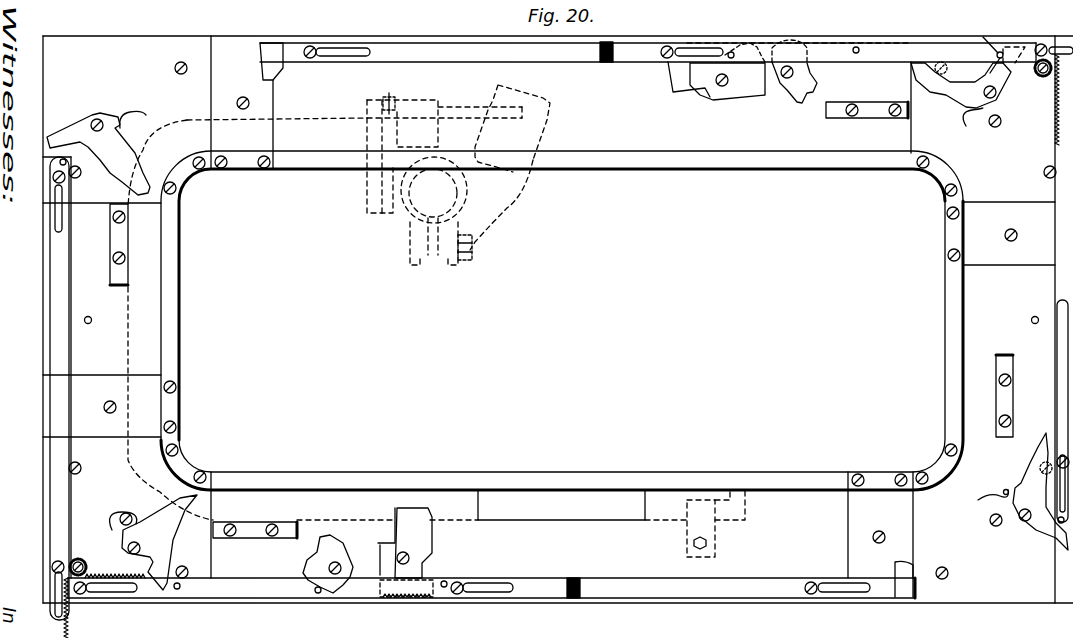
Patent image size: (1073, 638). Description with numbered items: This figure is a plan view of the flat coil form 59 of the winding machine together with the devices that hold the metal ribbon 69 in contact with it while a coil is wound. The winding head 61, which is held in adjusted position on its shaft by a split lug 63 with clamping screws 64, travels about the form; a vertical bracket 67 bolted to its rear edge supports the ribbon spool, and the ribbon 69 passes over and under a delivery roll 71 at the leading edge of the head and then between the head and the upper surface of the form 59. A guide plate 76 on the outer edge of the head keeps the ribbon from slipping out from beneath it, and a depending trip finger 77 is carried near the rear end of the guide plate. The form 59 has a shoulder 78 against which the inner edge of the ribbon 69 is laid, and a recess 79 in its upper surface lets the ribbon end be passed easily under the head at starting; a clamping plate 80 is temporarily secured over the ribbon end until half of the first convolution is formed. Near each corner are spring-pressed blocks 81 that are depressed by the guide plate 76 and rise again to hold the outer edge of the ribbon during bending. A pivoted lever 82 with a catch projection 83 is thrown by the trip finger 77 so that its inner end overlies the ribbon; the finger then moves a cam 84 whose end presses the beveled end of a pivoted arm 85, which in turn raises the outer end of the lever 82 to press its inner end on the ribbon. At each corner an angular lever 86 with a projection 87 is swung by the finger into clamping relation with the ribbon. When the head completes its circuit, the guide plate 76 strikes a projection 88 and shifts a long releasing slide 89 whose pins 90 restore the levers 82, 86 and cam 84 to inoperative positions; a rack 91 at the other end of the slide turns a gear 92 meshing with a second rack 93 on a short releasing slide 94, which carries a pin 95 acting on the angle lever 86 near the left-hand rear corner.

The coil form 59 is at (953, 593).
The winding head 61 is at (487, 231).
The split lug 63 is at (440, 267).
The clamping screws 64 is at (470, 262).
The vertical bracket 67 is at (367, 107).
The metal ribbon 69 is at (140, 482).
The delivery roll 71 is at (553, 119).
The guide plate 76 is at (470, 106).
The trip finger 77 is at (404, 102).
The shoulder 78 is at (795, 490).
The recess 79 is at (561, 516).
The clamping plate 80 is at (718, 530).
The spring-pressed blocks 81 is at (869, 118).
The lever 82 is at (737, 97).
The catch projection 83 is at (706, 98).
The cam 84 is at (800, 102).
The arm 85 is at (770, 36).
The angular lever 86 is at (118, 166).
The projection 87 is at (146, 115).
The projection 88 is at (262, 71).
The long releasing slide 89 is at (430, 47).
The pins 90 is at (730, 51).
The rack 91 is at (110, 578).
The gear 92 is at (80, 559).
The second rack 93 is at (70, 612).
The short releasing slide 94 is at (57, 497).
The pin 95 is at (63, 158).